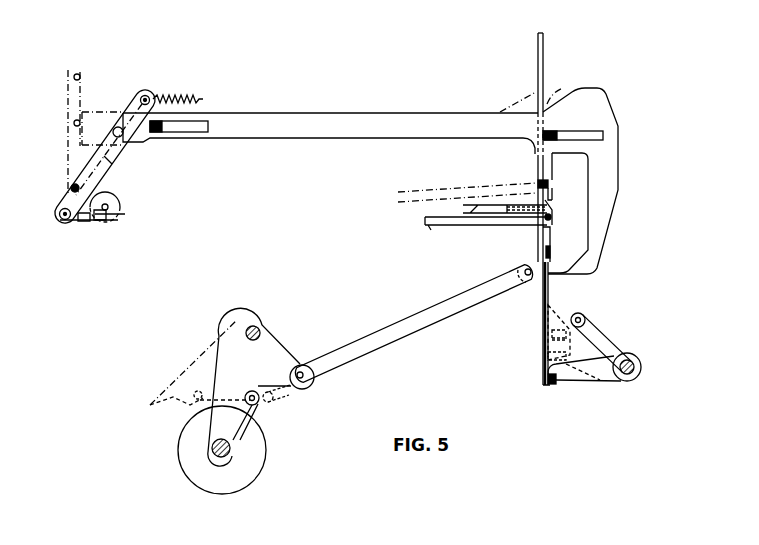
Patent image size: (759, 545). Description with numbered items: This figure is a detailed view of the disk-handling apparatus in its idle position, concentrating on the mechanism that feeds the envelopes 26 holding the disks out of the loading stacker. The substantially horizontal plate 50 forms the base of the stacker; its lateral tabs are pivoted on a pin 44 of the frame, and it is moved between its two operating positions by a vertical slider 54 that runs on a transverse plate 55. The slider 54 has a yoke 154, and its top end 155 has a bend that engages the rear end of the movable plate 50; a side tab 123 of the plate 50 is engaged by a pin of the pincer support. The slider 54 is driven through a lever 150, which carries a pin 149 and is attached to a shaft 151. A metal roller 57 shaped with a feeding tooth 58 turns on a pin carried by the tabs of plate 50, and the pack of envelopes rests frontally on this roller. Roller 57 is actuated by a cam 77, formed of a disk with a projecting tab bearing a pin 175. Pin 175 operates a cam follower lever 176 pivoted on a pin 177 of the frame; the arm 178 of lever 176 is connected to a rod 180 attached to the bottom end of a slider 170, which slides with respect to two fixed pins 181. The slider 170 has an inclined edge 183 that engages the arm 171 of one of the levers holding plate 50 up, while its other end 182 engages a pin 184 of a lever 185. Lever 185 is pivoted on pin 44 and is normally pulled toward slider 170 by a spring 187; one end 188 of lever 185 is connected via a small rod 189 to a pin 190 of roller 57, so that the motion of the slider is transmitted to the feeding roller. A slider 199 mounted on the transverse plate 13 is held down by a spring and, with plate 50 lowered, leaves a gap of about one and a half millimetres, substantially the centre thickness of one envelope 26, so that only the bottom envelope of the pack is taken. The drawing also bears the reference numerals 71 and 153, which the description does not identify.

The transverse plate 13 is at (538, 76).
The envelope 26 is at (506, 214).
The pin 44 is at (70, 184).
The plate 50 is at (432, 227).
The vertical slider 54 is at (549, 292).
The transverse plate 55 is at (543, 307).
The metal roller 57 is at (118, 200).
The feeding tooth 58 is at (126, 214).
The wheel shaft 71 is at (231, 452).
The cam 77 is at (262, 455).
The side tab 123 is at (546, 228).
The pin 149 is at (584, 318).
The lever 150 is at (613, 346).
The shaft 151 is at (634, 380).
The link 153 is at (584, 382).
The yoke 154 is at (553, 385).
The top end 155 is at (551, 224).
The slider 170 is at (357, 119).
The arm 171 is at (558, 96).
The pin 175 is at (258, 404).
The cam follower lever 176 is at (224, 374).
The pin 177 is at (257, 326).
The arm 178 is at (290, 355).
The rod 180 is at (393, 325).
The fixed pins 181 is at (157, 132).
The end 182 is at (121, 118).
The inclined edge 183 is at (570, 93).
The pin 184 is at (120, 138).
The lever 185 is at (108, 160).
The spring 187 is at (200, 97).
The end 188 is at (62, 210).
The small rod 189 is at (84, 221).
The pin 190 is at (98, 221).
The slider 199 is at (553, 176).